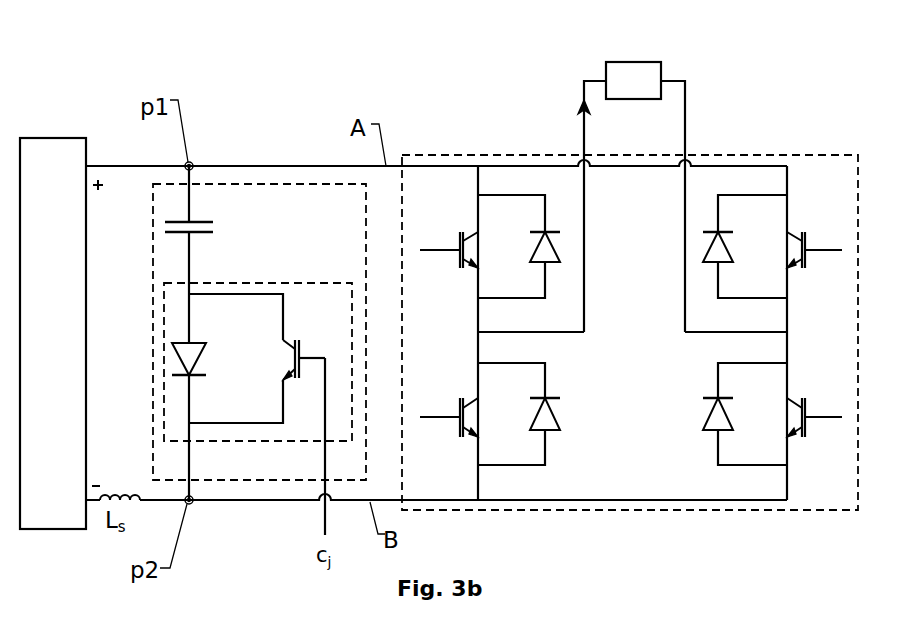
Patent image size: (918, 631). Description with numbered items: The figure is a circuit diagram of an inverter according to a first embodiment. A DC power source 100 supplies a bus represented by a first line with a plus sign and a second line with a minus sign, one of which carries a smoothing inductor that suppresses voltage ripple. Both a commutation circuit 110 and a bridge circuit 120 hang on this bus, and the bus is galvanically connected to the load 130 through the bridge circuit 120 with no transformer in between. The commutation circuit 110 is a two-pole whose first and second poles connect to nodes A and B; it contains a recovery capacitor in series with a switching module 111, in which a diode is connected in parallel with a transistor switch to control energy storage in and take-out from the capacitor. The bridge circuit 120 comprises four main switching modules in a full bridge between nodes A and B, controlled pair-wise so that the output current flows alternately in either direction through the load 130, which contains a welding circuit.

The DC power source 100 is at (81, 138).
The commutation circuit 110 is at (285, 184).
The switching module 111 is at (283, 283).
The bridge circuit 120 is at (513, 154).
The load 130 is at (632, 62).